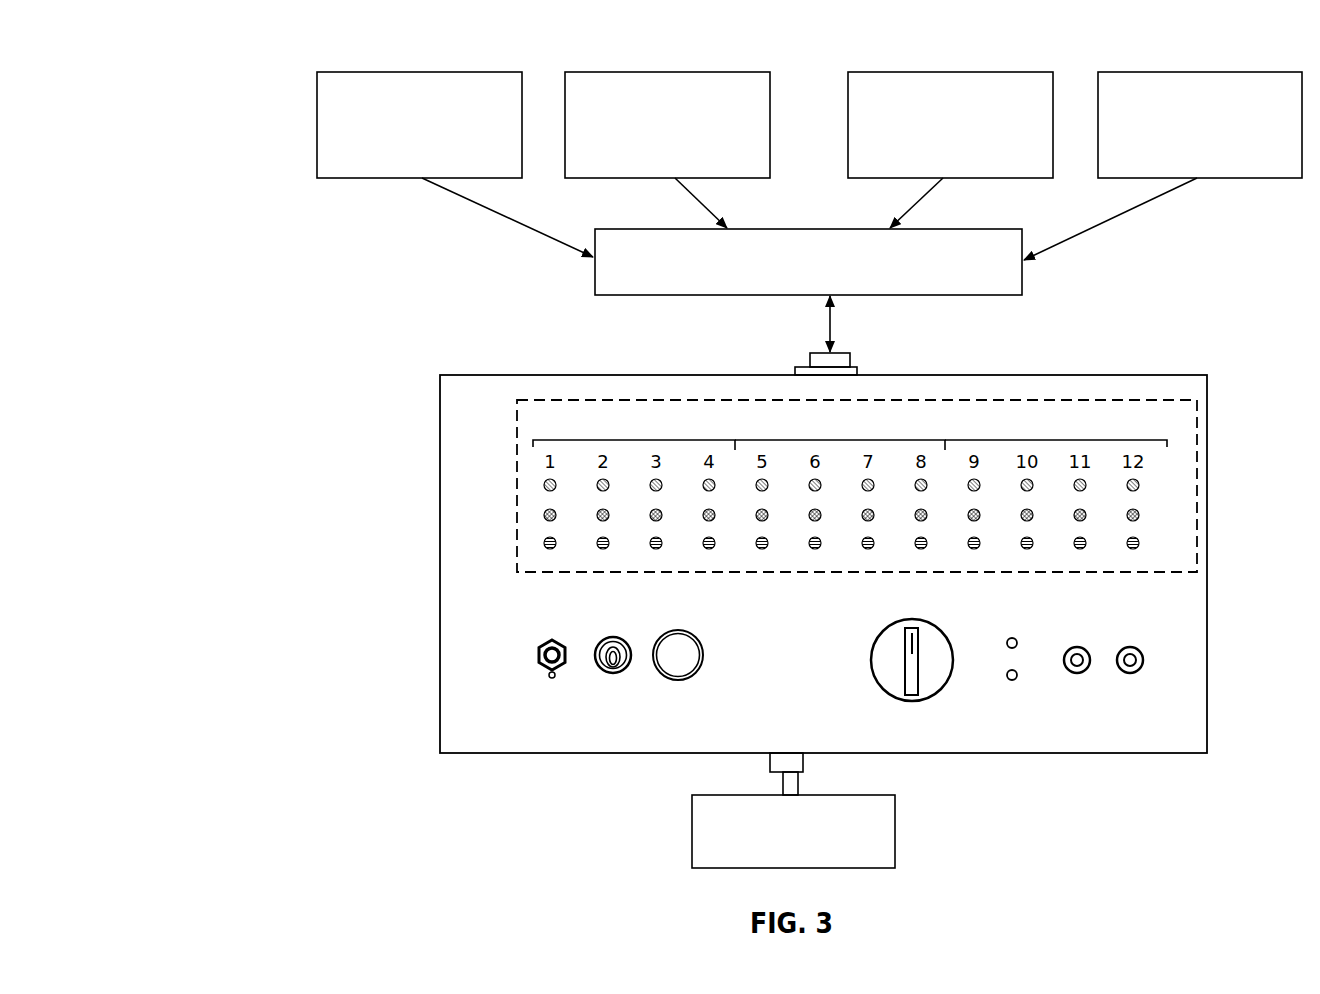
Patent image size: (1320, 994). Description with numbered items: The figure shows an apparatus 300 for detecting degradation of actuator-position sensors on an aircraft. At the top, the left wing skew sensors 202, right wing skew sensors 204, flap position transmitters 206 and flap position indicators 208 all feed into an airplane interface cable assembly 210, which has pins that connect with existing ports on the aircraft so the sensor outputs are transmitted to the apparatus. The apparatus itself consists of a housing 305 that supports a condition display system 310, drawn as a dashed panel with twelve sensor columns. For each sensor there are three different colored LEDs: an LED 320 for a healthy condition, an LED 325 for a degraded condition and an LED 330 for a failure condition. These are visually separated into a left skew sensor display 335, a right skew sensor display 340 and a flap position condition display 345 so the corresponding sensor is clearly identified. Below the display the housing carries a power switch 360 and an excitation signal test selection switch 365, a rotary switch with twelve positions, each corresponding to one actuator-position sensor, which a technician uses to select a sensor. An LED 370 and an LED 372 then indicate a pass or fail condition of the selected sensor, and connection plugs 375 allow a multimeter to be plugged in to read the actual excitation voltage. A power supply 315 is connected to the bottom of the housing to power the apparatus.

The apparatus for detecting degradation of an actuator-position sensor 300 is at (246, 48).
The left wing skew sensors 202 is at (405, 72).
The right wing skew sensors 204 is at (653, 72).
The flap position transmitters 206 is at (937, 72).
The flap position indicators 208 is at (1183, 72).
The airplane interface cable assembly 210 is at (1022, 280).
The housing 305 is at (1150, 375).
The condition display system 310 is at (1197, 445).
The power supply 315 is at (895, 832).
The LED 320 is at (525, 488).
The LED 325 is at (525, 519).
The LED 330 is at (525, 548).
The left skew sensor display 335 is at (648, 440).
The right skew sensor display 340 is at (852, 440).
The flap position condition display 345 is at (1065, 440).
The power switch 360 is at (602, 670).
The excitation signal test selection switch 365 is at (895, 678).
The LED 370 is at (1016, 638).
The LED 372 is at (1012, 680).
The connection plugs 375 is at (1105, 680).